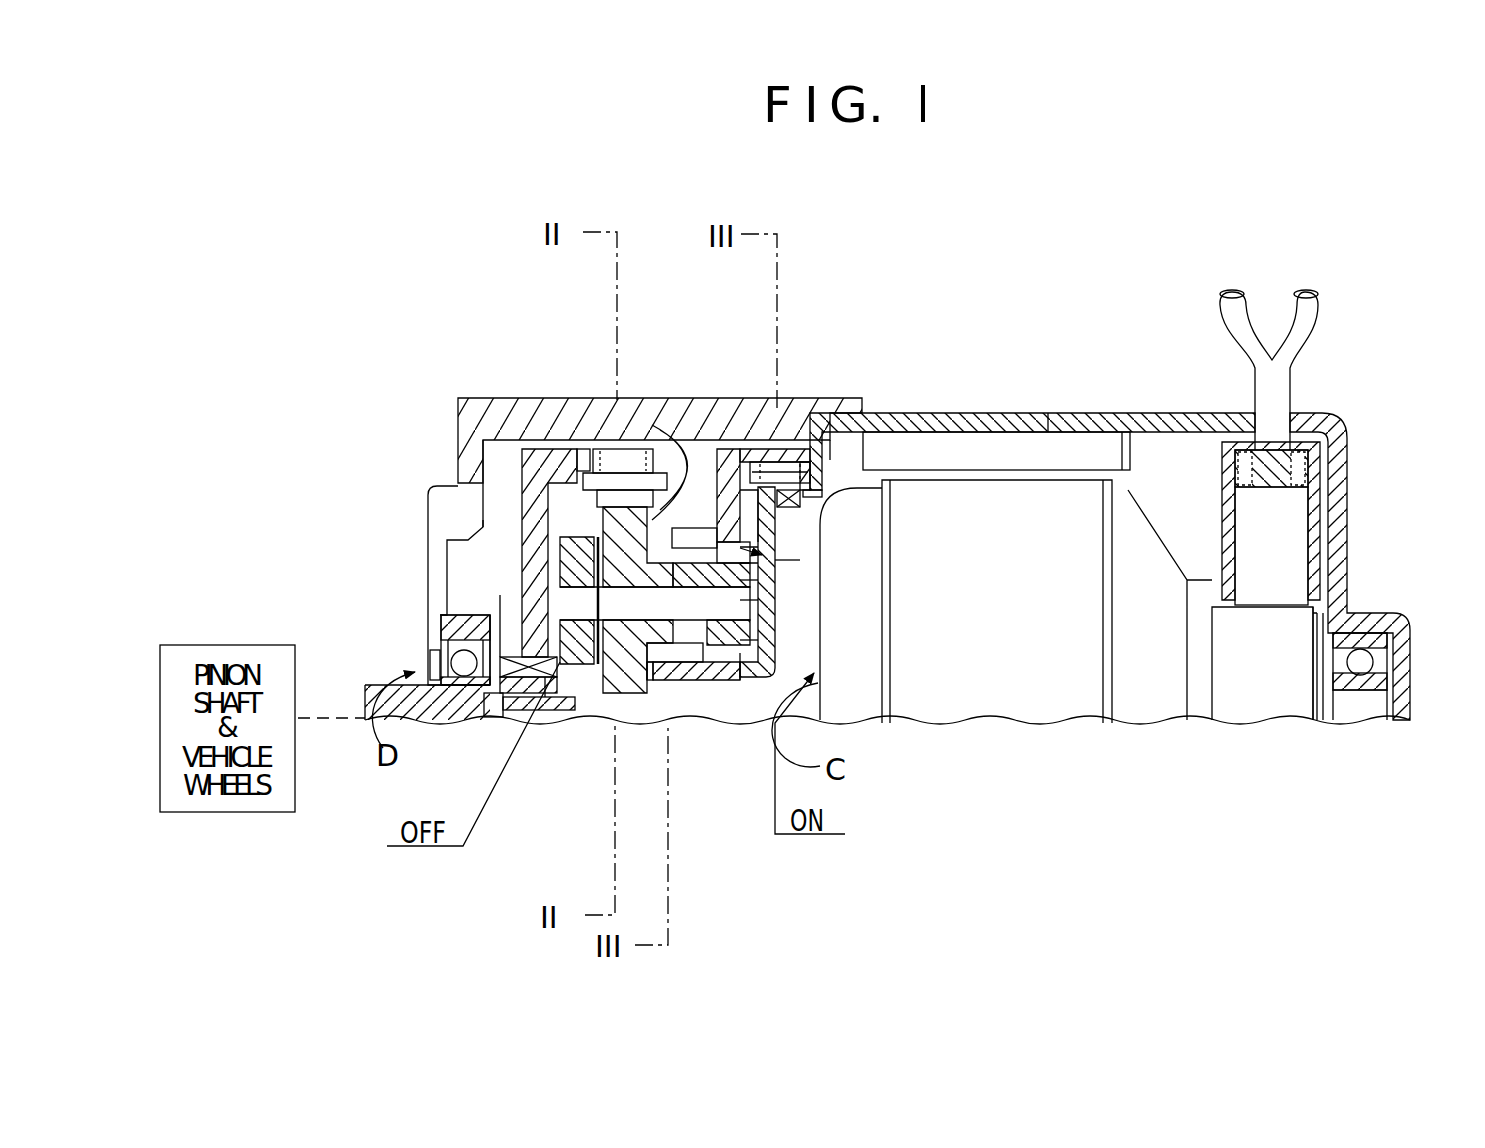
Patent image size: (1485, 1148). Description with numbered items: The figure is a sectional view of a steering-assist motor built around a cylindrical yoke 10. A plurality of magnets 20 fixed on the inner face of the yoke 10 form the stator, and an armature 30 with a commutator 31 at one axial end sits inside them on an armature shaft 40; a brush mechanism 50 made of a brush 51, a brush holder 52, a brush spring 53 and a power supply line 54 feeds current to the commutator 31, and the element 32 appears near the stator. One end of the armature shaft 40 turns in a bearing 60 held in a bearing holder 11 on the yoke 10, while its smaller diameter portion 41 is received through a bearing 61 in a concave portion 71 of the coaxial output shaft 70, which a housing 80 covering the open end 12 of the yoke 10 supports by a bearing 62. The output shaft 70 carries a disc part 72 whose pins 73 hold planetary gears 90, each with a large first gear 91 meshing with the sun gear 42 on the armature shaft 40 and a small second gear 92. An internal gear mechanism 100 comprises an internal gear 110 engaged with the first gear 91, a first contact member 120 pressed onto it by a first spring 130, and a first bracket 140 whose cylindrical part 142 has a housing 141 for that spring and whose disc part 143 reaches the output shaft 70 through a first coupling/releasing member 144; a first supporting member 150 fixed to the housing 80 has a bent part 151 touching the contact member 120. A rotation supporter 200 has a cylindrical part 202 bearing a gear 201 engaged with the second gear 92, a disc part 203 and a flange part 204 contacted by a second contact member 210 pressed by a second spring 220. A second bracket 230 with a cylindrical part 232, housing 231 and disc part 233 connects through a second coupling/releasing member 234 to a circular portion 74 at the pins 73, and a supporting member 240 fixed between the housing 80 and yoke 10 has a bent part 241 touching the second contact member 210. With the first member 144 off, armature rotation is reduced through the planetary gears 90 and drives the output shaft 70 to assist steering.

The yoke 10 is at (1048, 413).
The bearing holder 11 is at (1373, 625).
The open end 12 is at (838, 440).
The magnets 20 is at (963, 450).
The armature 30 is at (1000, 515).
The commutator 31 is at (1257, 690).
The stator coil end 32 is at (1122, 465).
The armature shaft 40 is at (735, 682).
The smaller diameter portion 41 is at (545, 700).
The sun gear 42 is at (647, 675).
The brush mechanism 50 is at (1212, 462).
The brush 51 is at (1287, 528).
The brush holder 52 is at (1300, 462).
The brush spring 53 is at (1295, 455).
The power supply line 54 is at (1303, 330).
The bearing 60 is at (1362, 692).
The bearing 61 is at (530, 677).
The bearing 62 is at (455, 646).
The output shaft 70 is at (382, 682).
The concave portion 71 is at (497, 693).
The disc part 72 is at (527, 480).
The pins 73 is at (563, 700).
The circular portion 74 is at (778, 617).
The housing 80 is at (610, 490).
The planetary gears 90 is at (715, 540).
The first gear 91 is at (623, 690).
The second gear 92 is at (690, 680).
The internal gear mechanism 100 is at (458, 486).
The internal gear 110 is at (622, 468).
The first contact member 120 is at (690, 450).
The first spring 130 is at (555, 440).
The first bracket 140 is at (510, 507).
The housing 141 is at (630, 480).
The cylindrical part 142 is at (600, 470).
The disc part 143 is at (522, 540).
The first coupling/releasing member 144 is at (523, 560).
The first supporting member 150 is at (725, 468).
The bent part 151 is at (740, 478).
The rotation supporter 200 is at (790, 640).
The gear 201 is at (677, 680).
The cylindrical part 202 is at (742, 690).
The disc part 203 is at (778, 578).
The flange part 204 is at (820, 520).
The second contact member 210 is at (795, 478).
The second spring 220 is at (760, 455).
The second bracket 230 is at (778, 560).
The housing 231 is at (778, 490).
The cylindrical part 232 is at (788, 488).
The disc part 233 is at (778, 595).
The second coupling/releasing member 234 is at (805, 668).
The supporting member 240 is at (850, 468).
The bent part 241 is at (845, 480).